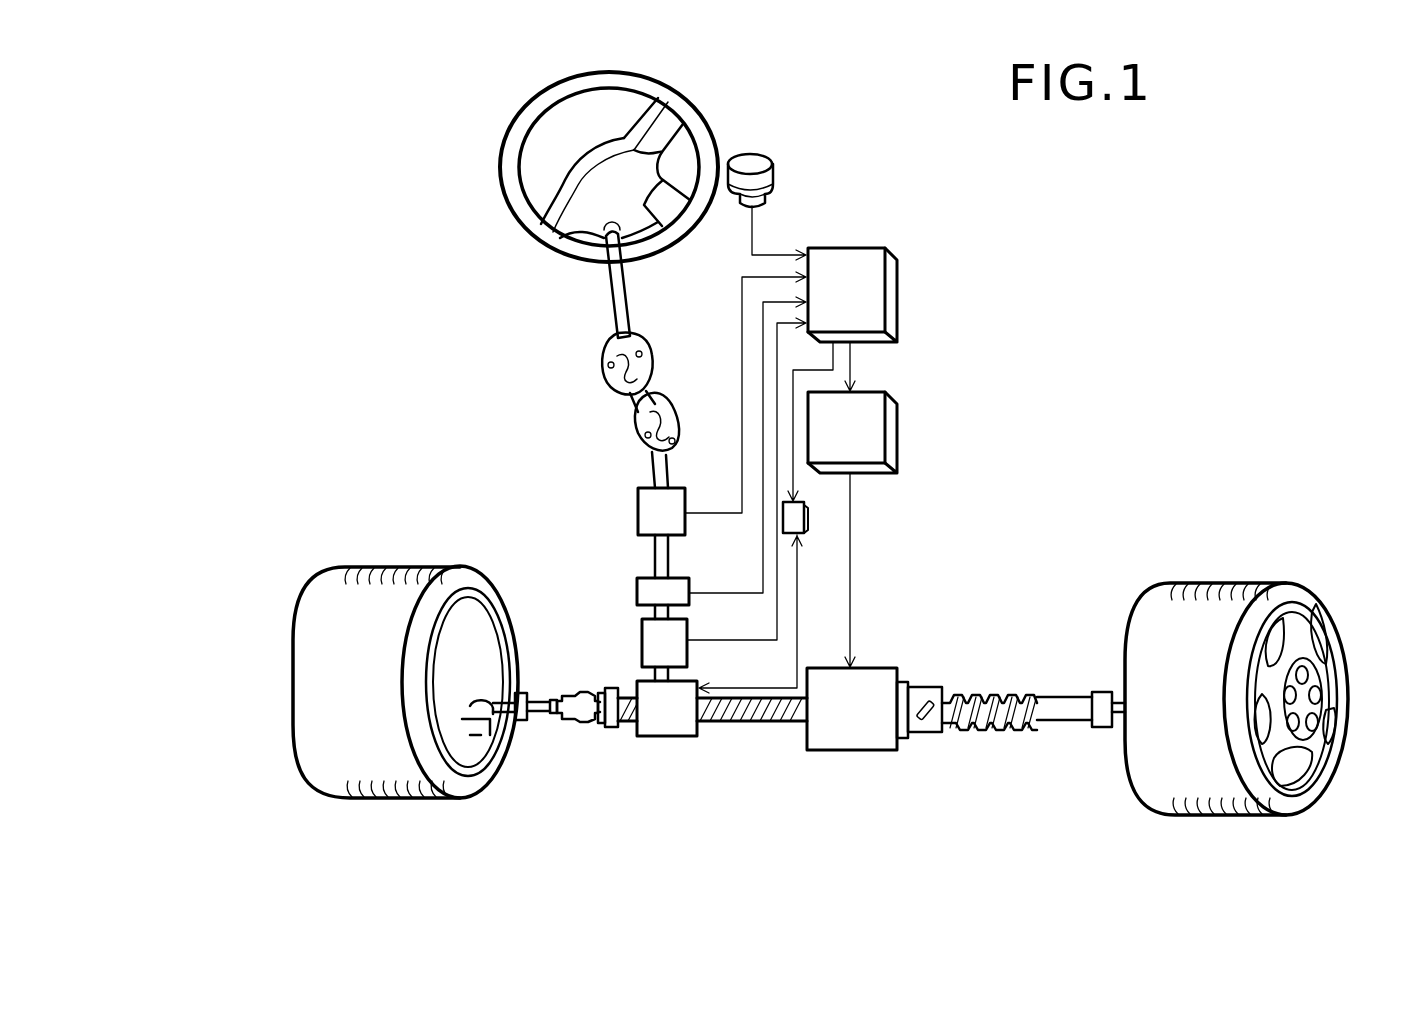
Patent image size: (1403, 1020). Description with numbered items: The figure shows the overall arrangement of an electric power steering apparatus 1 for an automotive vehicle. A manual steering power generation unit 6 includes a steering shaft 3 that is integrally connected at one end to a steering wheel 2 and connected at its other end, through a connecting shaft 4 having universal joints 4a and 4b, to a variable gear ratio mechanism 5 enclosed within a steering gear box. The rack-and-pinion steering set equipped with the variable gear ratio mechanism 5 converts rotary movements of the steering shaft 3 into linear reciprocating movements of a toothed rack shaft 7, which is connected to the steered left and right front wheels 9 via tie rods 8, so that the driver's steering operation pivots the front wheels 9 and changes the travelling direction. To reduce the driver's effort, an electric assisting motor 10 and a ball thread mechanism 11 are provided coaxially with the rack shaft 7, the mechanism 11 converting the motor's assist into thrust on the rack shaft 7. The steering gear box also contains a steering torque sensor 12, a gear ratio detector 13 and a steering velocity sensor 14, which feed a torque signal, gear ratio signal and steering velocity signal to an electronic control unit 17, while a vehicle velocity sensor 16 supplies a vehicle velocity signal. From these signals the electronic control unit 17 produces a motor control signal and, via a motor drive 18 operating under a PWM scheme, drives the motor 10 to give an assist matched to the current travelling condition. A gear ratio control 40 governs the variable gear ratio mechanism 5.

The electric power steering apparatus 1 is at (1020, 215).
The steering wheel 2 is at (520, 130).
The steering shaft 3 is at (607, 280).
The connecting shaft 4 is at (666, 362).
The universal joint 4a is at (637, 353).
The universal joint 4b is at (650, 418).
The variable gear ratio mechanism 5 is at (673, 722).
The manual steering power generation unit 6 is at (580, 326).
The rack shaft 7 is at (752, 712).
The tie rods 8 is at (505, 700).
The front wheels 9 is at (375, 567).
The electric assisting motor 10 is at (856, 732).
The ball thread mechanism 11 is at (995, 693).
The steering torque sensor 12 is at (637, 594).
The gear ratio detector 13 is at (642, 650).
The steering velocity sensor 14 is at (636, 500).
The vehicle velocity sensor 16 is at (762, 162).
The electronic control unit 17 is at (848, 248).
The motor drive 18 is at (890, 424).
The gear ratio control 40 is at (808, 520).